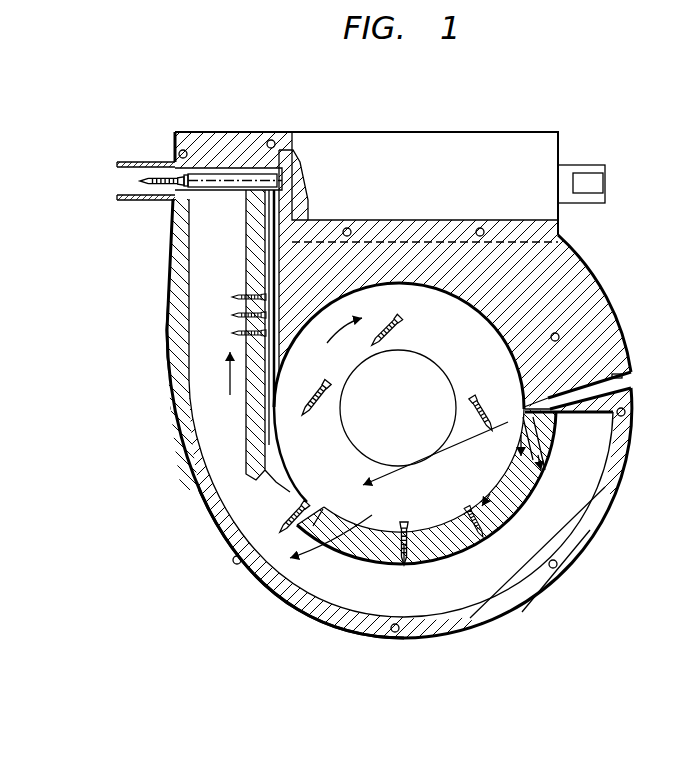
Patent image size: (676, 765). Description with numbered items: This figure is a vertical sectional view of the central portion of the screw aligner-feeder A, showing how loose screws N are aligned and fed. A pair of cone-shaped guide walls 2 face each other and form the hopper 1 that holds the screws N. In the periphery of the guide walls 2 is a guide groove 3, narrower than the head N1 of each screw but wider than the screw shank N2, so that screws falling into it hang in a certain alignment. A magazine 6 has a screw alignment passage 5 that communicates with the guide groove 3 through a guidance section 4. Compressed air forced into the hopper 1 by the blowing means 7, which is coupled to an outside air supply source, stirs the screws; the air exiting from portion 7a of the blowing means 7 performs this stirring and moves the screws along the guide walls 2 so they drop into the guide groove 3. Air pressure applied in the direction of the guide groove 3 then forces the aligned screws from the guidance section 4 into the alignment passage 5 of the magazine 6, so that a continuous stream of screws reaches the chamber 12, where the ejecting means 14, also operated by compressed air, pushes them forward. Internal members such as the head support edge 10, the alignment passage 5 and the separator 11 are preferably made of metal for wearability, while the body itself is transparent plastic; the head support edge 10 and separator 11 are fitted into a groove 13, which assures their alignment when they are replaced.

The screw feeding apparatus A is at (452, 124).
The hopper 1 is at (578, 274).
The guide walls 2 is at (493, 467).
The guide groove 3 is at (505, 577).
The guidance section 4 is at (322, 509).
The screw alignment passage 5 is at (200, 397).
The magazine 6 is at (168, 373).
The blowing means 7 is at (592, 378).
The portion of blowing means 7a is at (527, 405).
The head support edge 10 is at (263, 480).
The separator 11 is at (276, 433).
The chamber 12 is at (206, 170).
The groove 13 is at (272, 257).
The ejecting means 14 is at (233, 180).
The screws N is at (480, 403).
The head N1 is at (406, 524).
The screw shank N2 is at (410, 563).